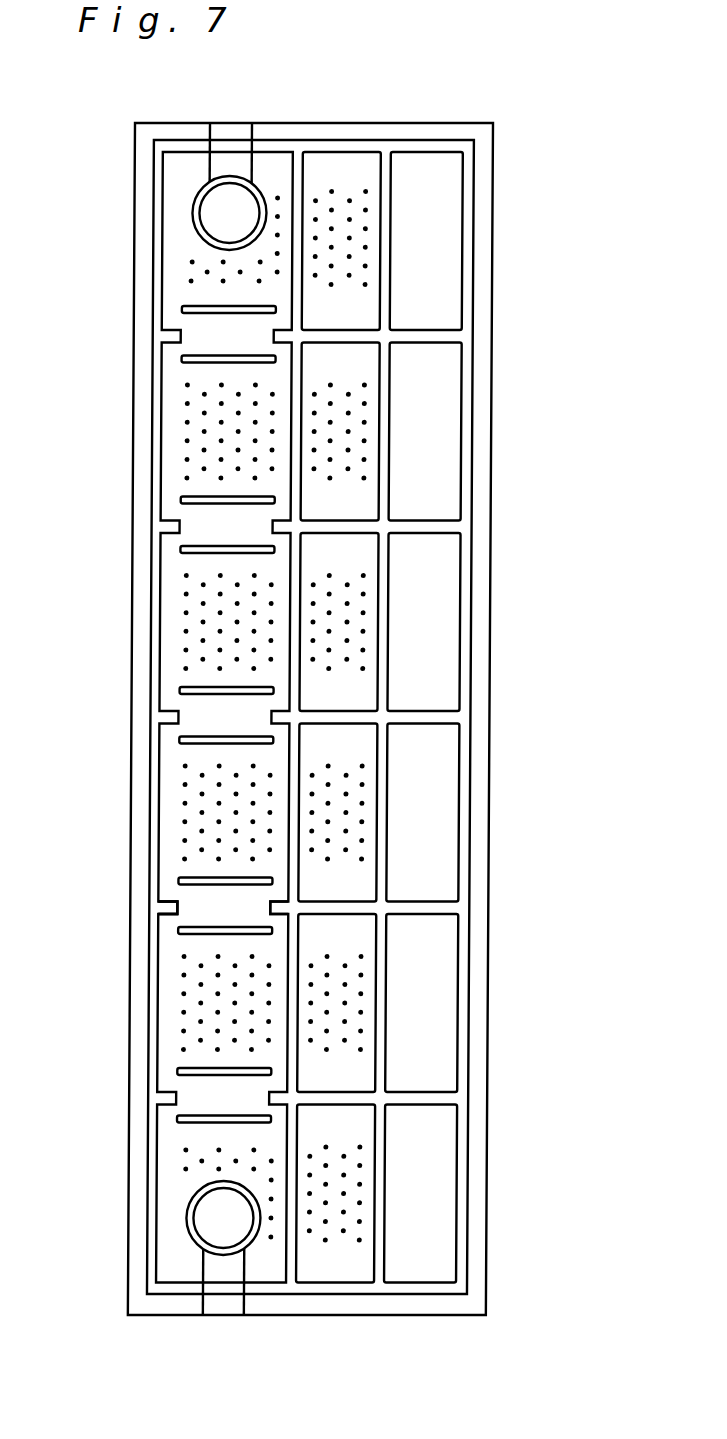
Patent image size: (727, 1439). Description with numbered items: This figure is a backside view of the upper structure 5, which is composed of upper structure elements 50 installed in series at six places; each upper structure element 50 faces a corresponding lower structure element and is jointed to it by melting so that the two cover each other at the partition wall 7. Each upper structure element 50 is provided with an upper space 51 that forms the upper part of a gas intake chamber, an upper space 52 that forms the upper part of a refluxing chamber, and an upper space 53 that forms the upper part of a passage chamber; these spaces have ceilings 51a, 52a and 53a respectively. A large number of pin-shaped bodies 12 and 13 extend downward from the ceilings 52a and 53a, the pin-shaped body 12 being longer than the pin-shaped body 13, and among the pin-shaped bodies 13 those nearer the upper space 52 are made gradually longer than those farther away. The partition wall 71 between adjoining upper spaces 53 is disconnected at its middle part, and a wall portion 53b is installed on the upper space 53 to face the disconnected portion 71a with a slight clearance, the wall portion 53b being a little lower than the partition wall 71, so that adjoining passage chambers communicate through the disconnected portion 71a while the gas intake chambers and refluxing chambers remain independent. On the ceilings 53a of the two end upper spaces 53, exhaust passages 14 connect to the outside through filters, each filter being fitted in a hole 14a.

The upper structure 5 is at (135, 155).
The partition wall 7 is at (464, 975).
The pin-shaped body 12 is at (363, 460).
The pin-shaped body 13 is at (187, 423).
The exhaust passage 14 is at (193, 207).
The hole 14a is at (220, 222).
The upper structure element 50 is at (476, 224).
The upper space 51 is at (442, 624).
The ceiling 51a is at (444, 759).
The upper space 52 is at (358, 558).
The ceiling 52a is at (358, 884).
The upper space 53 is at (195, 677).
The ceiling 53a is at (187, 867).
The wall portion 53b is at (183, 928).
The partition wall 71 is at (170, 900).
The disconnected portion 71a is at (203, 902).